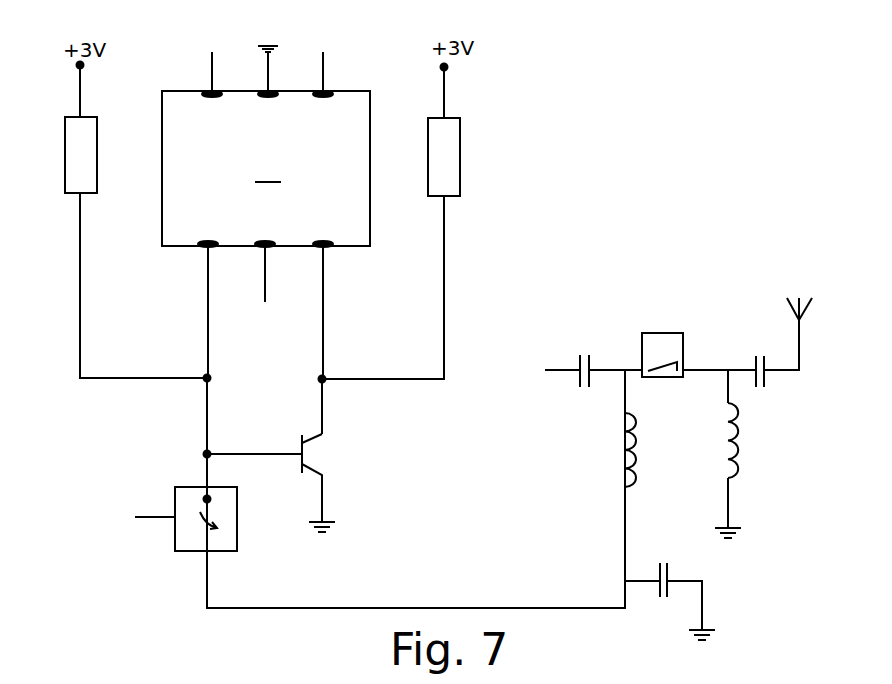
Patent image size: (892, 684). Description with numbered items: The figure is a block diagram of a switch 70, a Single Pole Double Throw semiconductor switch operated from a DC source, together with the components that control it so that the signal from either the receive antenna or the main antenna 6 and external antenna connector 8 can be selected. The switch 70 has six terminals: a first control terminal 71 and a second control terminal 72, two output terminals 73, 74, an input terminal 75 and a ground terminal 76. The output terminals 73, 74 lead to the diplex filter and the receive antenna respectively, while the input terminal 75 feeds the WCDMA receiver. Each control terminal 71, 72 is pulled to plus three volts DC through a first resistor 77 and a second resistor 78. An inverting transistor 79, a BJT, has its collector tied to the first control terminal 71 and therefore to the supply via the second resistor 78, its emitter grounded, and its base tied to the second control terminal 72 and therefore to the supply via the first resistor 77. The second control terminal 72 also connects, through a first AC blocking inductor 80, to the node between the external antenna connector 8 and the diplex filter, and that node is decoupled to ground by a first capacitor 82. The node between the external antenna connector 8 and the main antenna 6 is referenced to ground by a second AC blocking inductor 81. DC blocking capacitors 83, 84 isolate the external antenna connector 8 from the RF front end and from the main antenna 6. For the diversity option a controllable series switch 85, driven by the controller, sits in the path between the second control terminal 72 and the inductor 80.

The main antenna 6 is at (805, 312).
The external antenna connector 8 is at (665, 333).
The switch 70 is at (266, 168).
The first control terminal 71 is at (330, 248).
The second control terminal 72 is at (203, 248).
The output terminal 73 is at (330, 90).
The output terminal 74 is at (210, 90).
The input terminal 75 is at (268, 250).
The ground terminal 76 is at (272, 90).
The first resistor 77 is at (66, 132).
The second resistor 78 is at (460, 158).
The inverting transistor 79 is at (300, 443).
The first AC blocking inductor 80 is at (622, 453).
The second AC blocking inductor 81 is at (740, 450).
The first capacitor 82 is at (670, 572).
The DC blocking capacitor 83 is at (578, 360).
The DC blocking capacitor 84 is at (755, 358).
The controllable series switch 85 is at (237, 503).